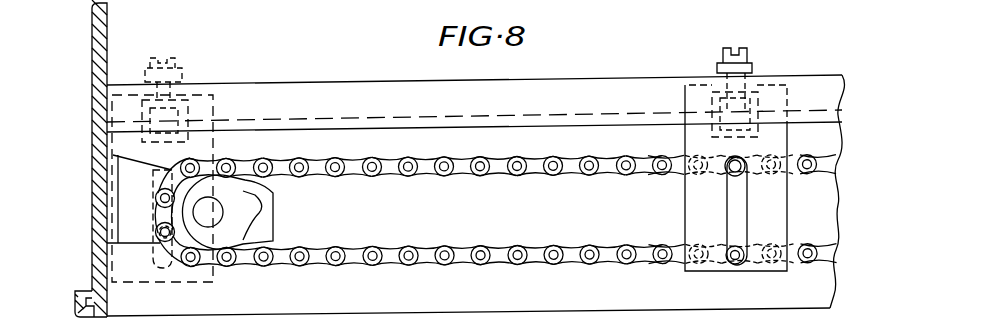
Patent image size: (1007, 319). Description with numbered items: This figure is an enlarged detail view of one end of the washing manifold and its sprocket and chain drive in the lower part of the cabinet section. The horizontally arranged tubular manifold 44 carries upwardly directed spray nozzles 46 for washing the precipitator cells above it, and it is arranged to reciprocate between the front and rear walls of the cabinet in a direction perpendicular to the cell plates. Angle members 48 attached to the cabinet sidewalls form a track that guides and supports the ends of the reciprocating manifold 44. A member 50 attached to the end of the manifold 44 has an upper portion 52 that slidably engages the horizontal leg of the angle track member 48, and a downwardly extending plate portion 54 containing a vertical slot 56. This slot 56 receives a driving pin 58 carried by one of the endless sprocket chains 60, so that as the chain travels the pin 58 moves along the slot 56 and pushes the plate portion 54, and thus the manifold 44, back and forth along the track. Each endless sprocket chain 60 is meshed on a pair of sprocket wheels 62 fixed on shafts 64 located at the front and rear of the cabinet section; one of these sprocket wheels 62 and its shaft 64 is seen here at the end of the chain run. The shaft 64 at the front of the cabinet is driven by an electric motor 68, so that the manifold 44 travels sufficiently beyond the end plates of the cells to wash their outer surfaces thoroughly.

The tubular manifold 44 is at (757, 95).
The spray nozzles 46 is at (737, 48).
The angle members 48 is at (615, 83).
The members 50 is at (789, 140).
The upper portion 52 is at (697, 85).
The plate portion 54 is at (688, 183).
The vertical slot 56 is at (745, 210).
The driving pin 58 is at (742, 170).
The endless sprocket chains 60 is at (603, 258).
The sprocket wheels 62 is at (208, 245).
The shafts 64 is at (209, 208).
The electric motor 68 is at (357, 0).